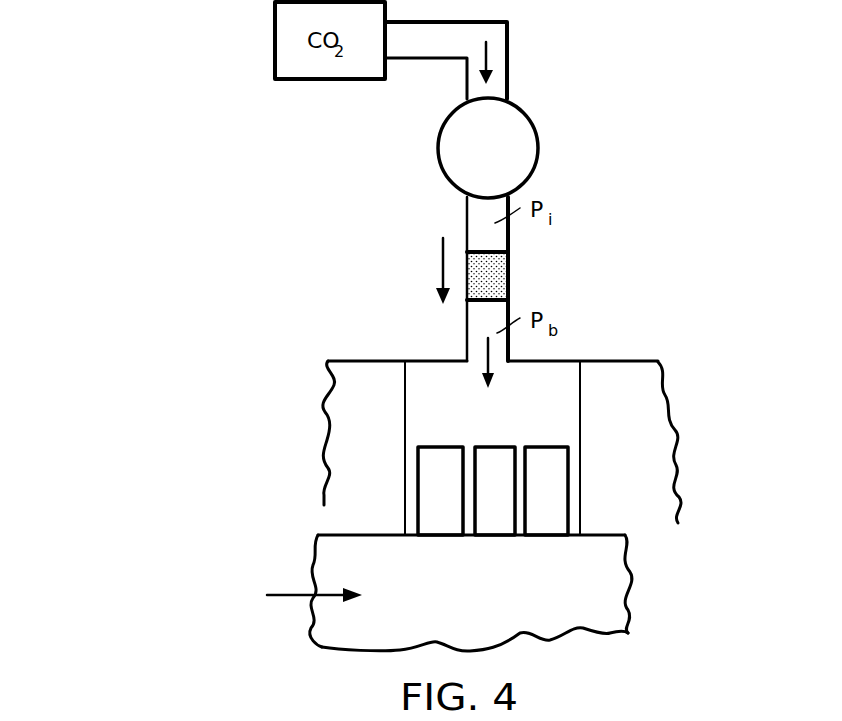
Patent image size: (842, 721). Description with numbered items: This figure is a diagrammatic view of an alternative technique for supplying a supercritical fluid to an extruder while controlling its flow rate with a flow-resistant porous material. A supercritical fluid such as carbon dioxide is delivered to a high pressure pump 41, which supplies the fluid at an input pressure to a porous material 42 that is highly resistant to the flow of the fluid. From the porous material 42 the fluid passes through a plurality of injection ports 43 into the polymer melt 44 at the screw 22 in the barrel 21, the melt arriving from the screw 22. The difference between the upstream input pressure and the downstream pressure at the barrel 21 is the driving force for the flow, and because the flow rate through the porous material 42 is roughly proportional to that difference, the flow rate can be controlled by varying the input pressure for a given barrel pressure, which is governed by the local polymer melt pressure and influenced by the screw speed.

The high pressure pump 41 is at (537, 130).
The porous material 42 is at (505, 282).
The injection ports 43 is at (503, 485).
The barrel 21 is at (333, 412).
The polymer melt 44 is at (340, 552).
The screw 22 is at (196, 602).